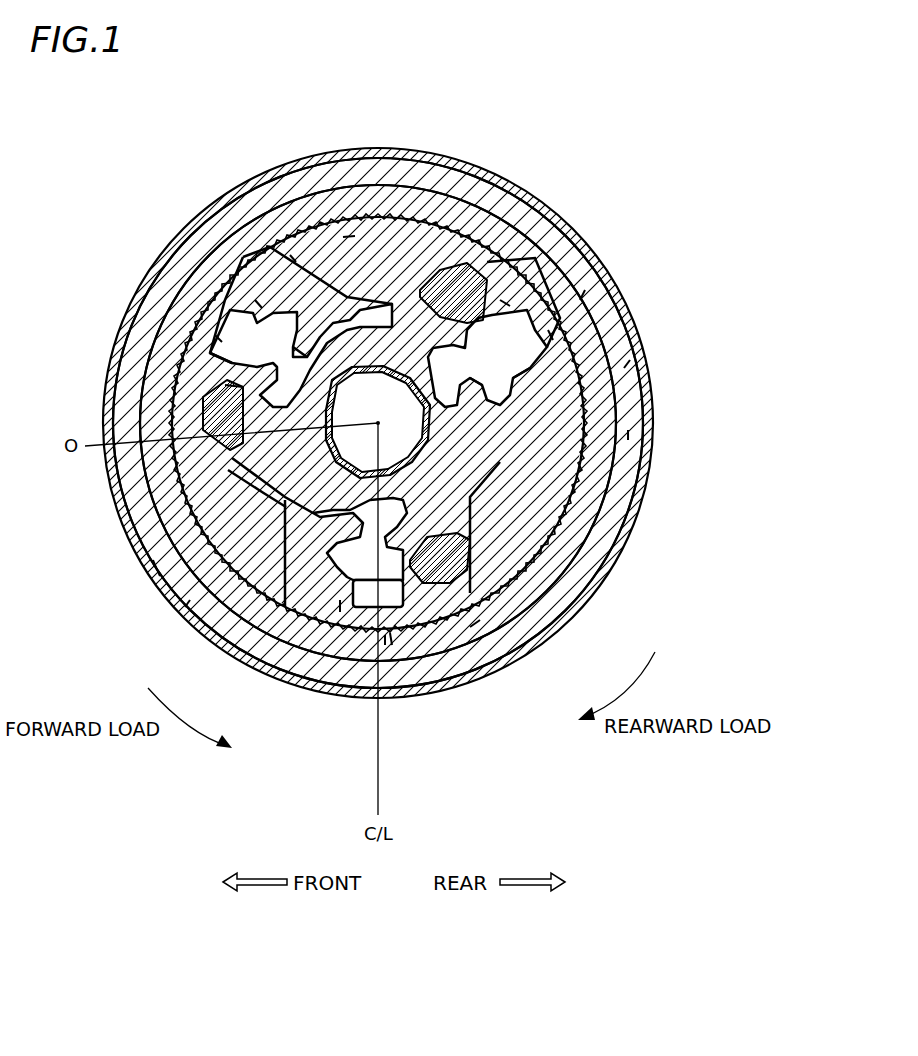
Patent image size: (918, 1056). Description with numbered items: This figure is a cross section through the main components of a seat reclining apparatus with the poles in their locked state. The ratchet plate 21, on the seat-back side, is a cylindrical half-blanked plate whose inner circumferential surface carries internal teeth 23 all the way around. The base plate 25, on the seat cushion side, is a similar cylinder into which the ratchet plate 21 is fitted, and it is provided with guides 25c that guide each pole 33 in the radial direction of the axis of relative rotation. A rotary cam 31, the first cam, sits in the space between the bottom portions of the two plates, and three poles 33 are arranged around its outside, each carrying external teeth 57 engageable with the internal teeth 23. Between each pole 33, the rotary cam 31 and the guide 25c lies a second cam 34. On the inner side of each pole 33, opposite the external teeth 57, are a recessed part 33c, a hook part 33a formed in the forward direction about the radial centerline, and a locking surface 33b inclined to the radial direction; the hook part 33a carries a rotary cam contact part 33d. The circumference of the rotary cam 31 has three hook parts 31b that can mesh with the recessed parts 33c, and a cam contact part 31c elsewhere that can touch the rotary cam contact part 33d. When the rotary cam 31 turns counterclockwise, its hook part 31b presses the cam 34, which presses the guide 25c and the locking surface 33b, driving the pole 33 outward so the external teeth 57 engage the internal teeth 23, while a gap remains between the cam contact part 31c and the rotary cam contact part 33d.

The ratchet plate 21 is at (587, 530).
The internal teeth 23 is at (650, 394).
The base plate 25 is at (623, 477).
The guide 25c is at (345, 240).
The rotary cam 31 is at (313, 497).
The hook part 31b is at (235, 360).
The cam contact part 31c is at (318, 240).
The pole 33 is at (240, 330).
The hook part 33a is at (280, 282).
The locking surface 33b is at (225, 385).
The recessed part 33c is at (255, 300).
The rotary cam contact part 33d is at (290, 255).
The cam 34 is at (215, 415).
The external teeth 57 is at (215, 335).